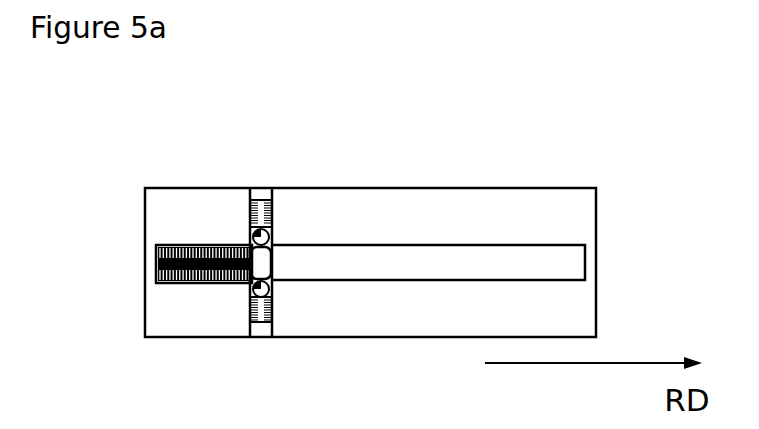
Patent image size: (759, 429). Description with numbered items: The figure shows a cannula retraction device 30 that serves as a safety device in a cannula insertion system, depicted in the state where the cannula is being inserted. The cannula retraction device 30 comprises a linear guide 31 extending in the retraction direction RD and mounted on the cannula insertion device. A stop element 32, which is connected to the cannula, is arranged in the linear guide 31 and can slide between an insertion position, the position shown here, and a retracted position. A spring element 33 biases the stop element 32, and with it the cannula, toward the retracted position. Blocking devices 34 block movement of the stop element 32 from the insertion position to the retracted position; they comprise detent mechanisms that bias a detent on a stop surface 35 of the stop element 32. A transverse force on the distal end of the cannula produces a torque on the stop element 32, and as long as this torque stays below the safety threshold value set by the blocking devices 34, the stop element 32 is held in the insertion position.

The cannula retraction device 30 is at (472, 139).
The linear guide 31 is at (503, 208).
The stop element 32 is at (264, 262).
The spring element 33 is at (200, 273).
The blocking devices 34 is at (265, 207).
The stop surface 35 is at (253, 215).